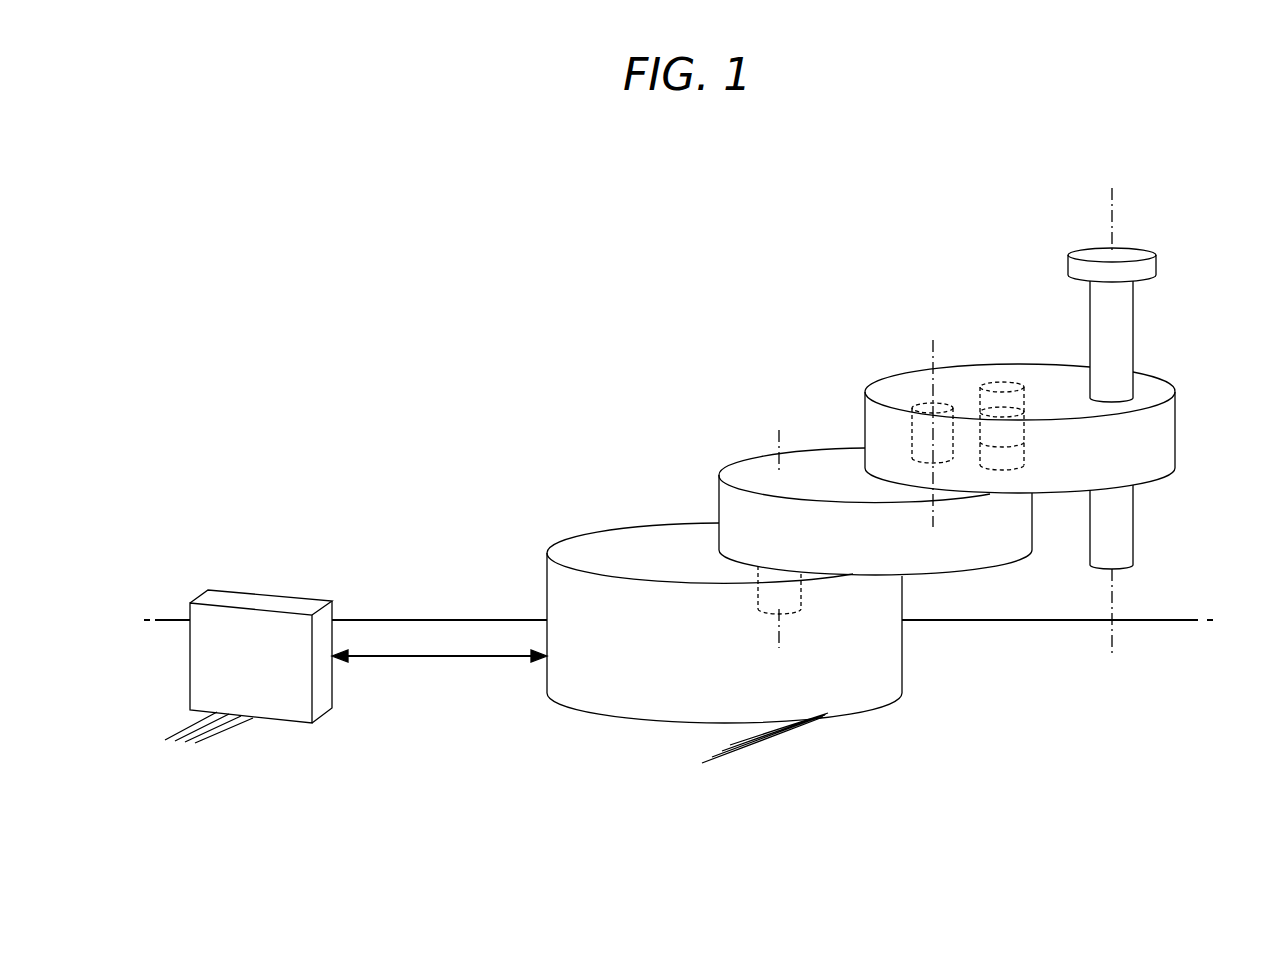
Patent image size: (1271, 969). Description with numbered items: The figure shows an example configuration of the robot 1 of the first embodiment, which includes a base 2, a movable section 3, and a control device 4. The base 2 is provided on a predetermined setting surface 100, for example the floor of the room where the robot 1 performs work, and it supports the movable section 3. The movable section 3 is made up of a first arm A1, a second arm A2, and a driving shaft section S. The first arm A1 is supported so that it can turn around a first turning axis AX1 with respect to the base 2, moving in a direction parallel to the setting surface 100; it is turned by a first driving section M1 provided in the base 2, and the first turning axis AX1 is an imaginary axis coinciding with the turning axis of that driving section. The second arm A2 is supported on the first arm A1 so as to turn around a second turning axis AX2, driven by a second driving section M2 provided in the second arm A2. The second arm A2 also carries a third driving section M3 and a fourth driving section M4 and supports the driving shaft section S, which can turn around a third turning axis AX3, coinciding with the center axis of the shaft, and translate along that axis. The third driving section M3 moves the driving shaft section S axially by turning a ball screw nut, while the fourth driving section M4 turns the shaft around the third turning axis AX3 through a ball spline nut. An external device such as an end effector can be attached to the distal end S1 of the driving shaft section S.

The robot 1 is at (475, 229).
The base 2 is at (547, 585).
The movable section 3 is at (1178, 190).
The control device 4 is at (288, 601).
The setting surface 100 is at (818, 729).
The first arm A1 is at (722, 495).
The second arm A2 is at (865, 401).
The first turning axis AX1 is at (779, 440).
The second turning axis AX2 is at (933, 348).
The third turning axis AX3 is at (1113, 216).
The first driving section M1 is at (758, 605).
The second driving section M2 is at (912, 421).
The third driving section M3 is at (1011, 382).
The fourth driving section M4 is at (1027, 441).
The driving shaft section S is at (1097, 298).
The distal end S1 is at (1122, 568).